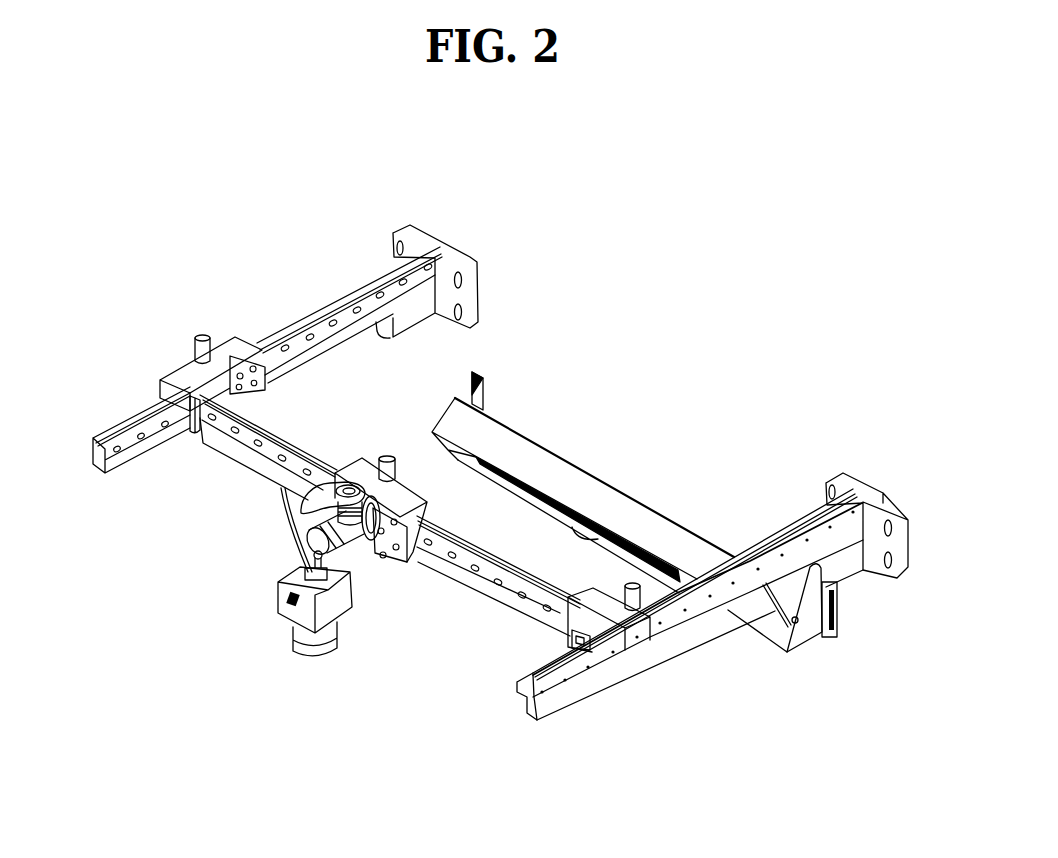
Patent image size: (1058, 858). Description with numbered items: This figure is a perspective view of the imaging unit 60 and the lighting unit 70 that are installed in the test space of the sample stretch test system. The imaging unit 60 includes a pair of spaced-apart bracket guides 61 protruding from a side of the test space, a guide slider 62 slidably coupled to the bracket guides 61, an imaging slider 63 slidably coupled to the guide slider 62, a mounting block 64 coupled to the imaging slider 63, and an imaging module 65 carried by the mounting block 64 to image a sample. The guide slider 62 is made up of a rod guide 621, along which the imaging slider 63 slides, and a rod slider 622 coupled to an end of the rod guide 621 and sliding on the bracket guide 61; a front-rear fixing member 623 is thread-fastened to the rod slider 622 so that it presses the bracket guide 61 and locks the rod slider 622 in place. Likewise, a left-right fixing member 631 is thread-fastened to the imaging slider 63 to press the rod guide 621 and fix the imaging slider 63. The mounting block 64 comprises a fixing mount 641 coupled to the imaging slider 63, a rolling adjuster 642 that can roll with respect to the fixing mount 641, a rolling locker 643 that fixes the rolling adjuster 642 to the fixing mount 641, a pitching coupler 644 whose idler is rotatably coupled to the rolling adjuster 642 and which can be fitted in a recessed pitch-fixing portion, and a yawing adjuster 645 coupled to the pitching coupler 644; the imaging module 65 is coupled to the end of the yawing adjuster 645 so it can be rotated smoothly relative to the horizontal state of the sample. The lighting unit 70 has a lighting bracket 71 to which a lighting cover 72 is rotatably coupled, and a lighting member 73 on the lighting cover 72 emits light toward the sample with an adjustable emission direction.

The imaging unit 60 is at (276, 288).
The bracket guide 61 is at (357, 287).
The guide slider 62 is at (585, 772).
The rod guide 621 is at (488, 552).
The rod slider 622 is at (180, 386).
The front-rear fixing member 623 is at (203, 333).
The imaging slider 63 is at (351, 463).
The left-right fixing member 631 is at (386, 455).
The mounting block 64 is at (430, 772).
The fixing mount 641 is at (360, 554).
The rolling adjuster 642 is at (376, 540).
The rolling locker 643 is at (406, 537).
The pitching coupler 644 is at (286, 603).
The yawing adjuster 645 is at (316, 568).
The imaging module 65 is at (277, 603).
The lighting unit 70 is at (641, 399).
The lighting bracket 71 is at (483, 403).
The lighting cover 72 is at (554, 467).
The lighting member 73 is at (597, 537).